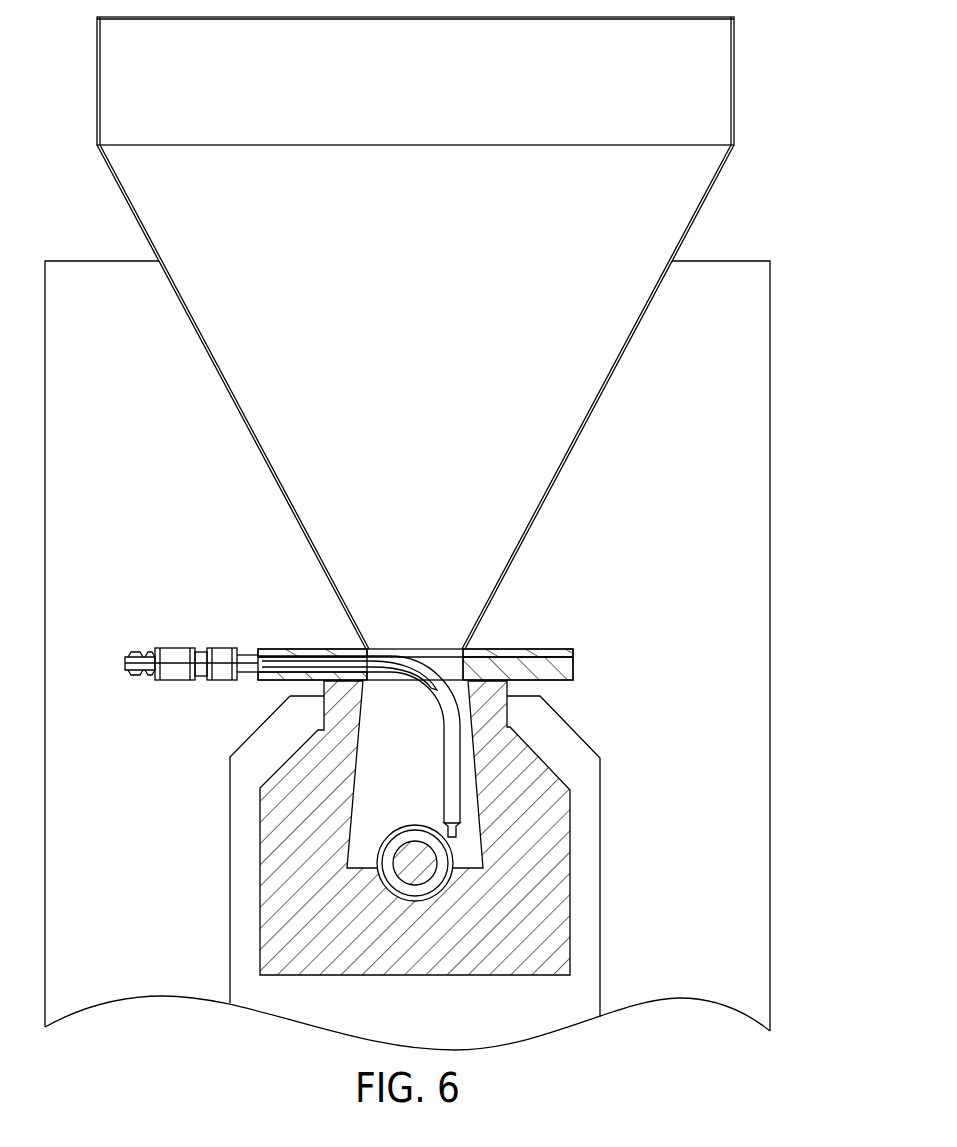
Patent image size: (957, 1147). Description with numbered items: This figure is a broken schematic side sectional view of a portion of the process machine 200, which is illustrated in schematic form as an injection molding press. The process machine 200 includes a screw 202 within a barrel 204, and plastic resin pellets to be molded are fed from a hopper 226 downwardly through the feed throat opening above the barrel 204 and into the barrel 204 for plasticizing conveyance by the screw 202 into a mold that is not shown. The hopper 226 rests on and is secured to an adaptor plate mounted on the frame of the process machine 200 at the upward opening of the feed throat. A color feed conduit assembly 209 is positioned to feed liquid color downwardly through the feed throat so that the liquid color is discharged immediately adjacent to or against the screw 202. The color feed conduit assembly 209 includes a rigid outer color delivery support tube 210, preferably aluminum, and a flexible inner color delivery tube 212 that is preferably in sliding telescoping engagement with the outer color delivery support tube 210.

The hopper 226 is at (735, 74).
The process machine 200 is at (597, 877).
The screw 202 is at (397, 862).
The barrel 204 is at (443, 887).
The color feed conduit assembly 209 is at (190, 645).
The rigid outer color delivery support tube 210 is at (452, 762).
The flexible inner color delivery tube 212 is at (455, 833).